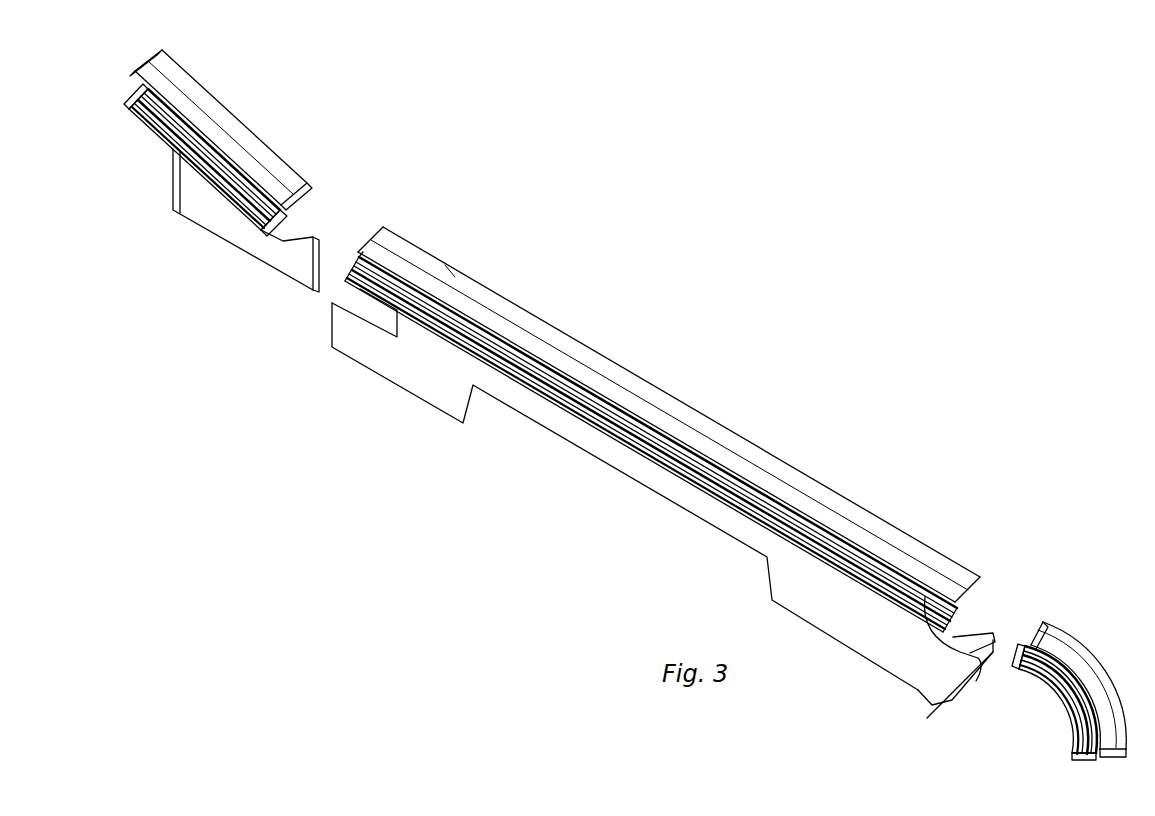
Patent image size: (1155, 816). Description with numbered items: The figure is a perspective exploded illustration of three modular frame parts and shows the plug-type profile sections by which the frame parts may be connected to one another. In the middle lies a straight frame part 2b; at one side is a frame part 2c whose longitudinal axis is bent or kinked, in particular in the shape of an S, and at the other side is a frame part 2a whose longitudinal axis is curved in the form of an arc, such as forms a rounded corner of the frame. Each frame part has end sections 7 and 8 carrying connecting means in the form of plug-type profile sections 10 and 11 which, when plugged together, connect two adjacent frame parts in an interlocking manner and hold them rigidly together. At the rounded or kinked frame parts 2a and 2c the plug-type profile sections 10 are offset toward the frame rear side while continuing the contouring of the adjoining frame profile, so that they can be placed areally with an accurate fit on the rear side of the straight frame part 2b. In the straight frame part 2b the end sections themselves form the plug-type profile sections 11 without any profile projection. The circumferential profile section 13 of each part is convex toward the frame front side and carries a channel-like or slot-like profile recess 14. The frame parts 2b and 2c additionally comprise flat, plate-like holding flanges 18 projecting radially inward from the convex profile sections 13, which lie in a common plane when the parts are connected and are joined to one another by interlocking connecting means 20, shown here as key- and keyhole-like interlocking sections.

The frame part 2a is at (1088, 626).
The straight frame part 2b is at (598, 358).
The frame part 2c is at (290, 135).
The end section 7 is at (325, 176).
The end section 8 is at (360, 213).
The plug-type profile section 10 is at (142, 68).
The plug-type profile section 11 is at (365, 238).
The circumferential profile section 13 is at (237, 137).
The profile recess 14 is at (977, 684).
The holding flange 18 is at (262, 252).
The connecting means 20 is at (933, 706).